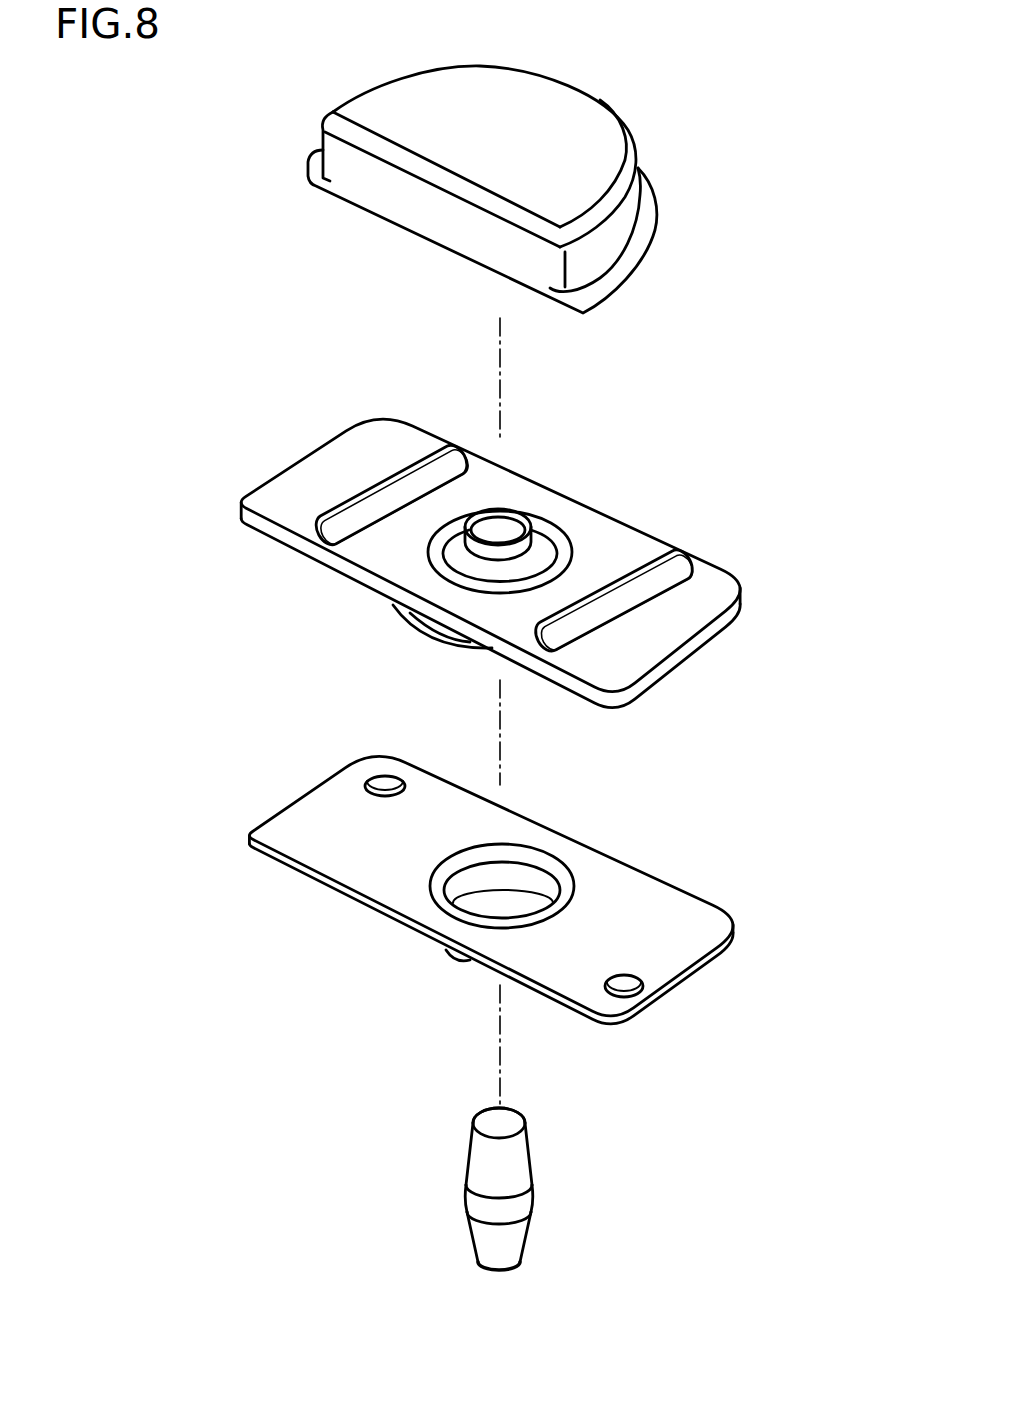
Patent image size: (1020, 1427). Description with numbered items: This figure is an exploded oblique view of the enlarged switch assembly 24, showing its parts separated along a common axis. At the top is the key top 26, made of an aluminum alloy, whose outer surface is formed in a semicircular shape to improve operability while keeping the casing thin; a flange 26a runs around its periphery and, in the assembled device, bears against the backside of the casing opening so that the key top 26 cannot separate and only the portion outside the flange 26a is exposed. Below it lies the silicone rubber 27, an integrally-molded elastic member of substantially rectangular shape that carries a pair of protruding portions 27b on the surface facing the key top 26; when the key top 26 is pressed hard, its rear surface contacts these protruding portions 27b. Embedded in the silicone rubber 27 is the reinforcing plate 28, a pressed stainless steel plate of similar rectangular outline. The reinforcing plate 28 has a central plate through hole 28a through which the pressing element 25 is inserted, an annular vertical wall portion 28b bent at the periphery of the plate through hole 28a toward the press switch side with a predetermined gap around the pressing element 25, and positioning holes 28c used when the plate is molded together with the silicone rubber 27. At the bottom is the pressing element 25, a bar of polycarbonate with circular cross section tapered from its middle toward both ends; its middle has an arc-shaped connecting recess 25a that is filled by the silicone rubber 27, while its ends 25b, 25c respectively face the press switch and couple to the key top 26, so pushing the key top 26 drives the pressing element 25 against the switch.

The switch assembly 24 is at (250, 39).
The pressing element 25 is at (533, 1157).
The connecting recess 25a is at (522, 1203).
The lower end portion 25b is at (510, 1267).
The upper end portion 25c is at (503, 1123).
The key top 26 is at (548, 90).
The flange 26a is at (648, 202).
The silicone rubber 27 is at (707, 587).
The protruding portions 27b is at (436, 460).
The reinforcing plate 28 is at (677, 907).
The plate through hole 28a is at (505, 876).
The vertical wall portion 28b is at (462, 956).
The positioning holes 28c is at (382, 777).